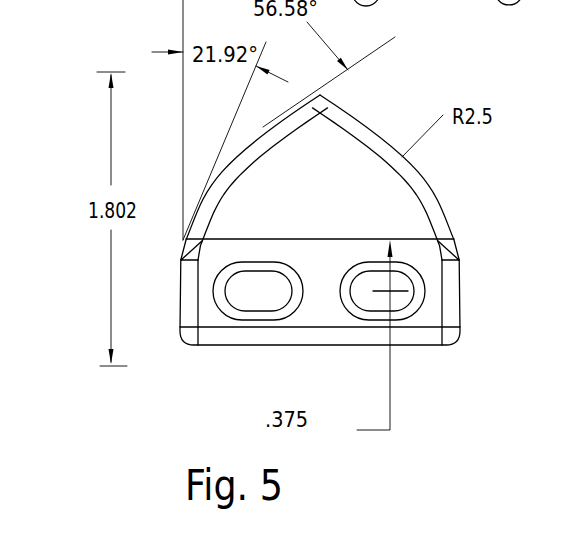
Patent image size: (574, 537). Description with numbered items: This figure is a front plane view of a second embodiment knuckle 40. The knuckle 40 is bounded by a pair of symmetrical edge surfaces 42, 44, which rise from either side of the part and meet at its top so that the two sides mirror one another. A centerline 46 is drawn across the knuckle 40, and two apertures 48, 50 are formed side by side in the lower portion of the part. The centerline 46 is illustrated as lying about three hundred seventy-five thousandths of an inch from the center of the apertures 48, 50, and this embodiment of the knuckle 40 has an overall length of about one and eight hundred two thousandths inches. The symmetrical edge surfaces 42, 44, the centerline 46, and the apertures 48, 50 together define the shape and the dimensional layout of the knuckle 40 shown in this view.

The knuckle 40 is at (432, 282).
The edge surface 42 is at (412, 170).
The edge surface 44 is at (236, 158).
The centerline 46 is at (415, 239).
The aperture 48 is at (243, 303).
The aperture 50 is at (370, 305).